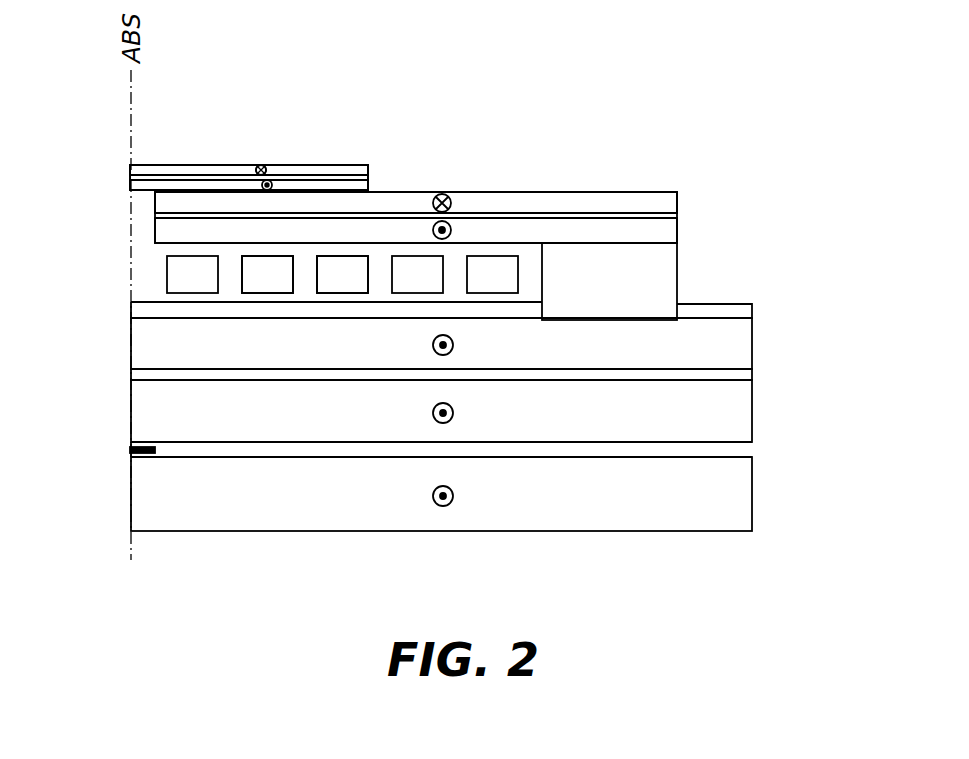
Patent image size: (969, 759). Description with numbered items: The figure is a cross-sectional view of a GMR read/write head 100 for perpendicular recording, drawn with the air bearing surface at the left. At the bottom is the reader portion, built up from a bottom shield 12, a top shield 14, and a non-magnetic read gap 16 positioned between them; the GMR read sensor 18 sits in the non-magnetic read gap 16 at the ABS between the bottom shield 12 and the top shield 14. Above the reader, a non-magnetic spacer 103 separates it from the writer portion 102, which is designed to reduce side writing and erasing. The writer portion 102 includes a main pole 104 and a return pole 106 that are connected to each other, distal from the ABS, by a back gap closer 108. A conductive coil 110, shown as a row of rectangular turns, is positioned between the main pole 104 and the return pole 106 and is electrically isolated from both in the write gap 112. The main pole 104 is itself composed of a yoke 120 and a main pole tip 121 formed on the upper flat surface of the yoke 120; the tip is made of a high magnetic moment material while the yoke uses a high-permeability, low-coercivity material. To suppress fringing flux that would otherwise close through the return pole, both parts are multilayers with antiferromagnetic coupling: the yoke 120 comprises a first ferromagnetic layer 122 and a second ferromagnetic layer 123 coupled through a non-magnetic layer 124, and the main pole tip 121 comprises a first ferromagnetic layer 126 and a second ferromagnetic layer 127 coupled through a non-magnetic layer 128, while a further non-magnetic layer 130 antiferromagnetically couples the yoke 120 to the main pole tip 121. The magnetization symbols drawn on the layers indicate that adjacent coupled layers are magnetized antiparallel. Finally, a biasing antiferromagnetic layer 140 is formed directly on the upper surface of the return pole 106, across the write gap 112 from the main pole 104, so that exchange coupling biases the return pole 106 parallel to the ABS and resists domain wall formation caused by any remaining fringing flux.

The GMR read/write head 100 is at (704, 112).
The writer portion 102 is at (847, 162).
The non-magnetic spacer 103 is at (137, 374).
The main pole 104 is at (777, 243).
The return pole 106 is at (152, 338).
The back gap closer 108 is at (633, 283).
The conductive coil 110 is at (272, 250).
The write gap 112 is at (155, 276).
The bottom shield 12 is at (143, 503).
The top shield 14 is at (152, 413).
The non-magnetic read gap 16 is at (737, 450).
The GMR read sensor 18 is at (128, 451).
The yoke 120 is at (690, 192).
The main pole tip 121 is at (382, 165).
The first ferromagnetic layer 122 is at (161, 230).
The second ferromagnetic layer 123 is at (161, 205).
The non-magnetic layer 124 is at (187, 212).
The first ferromagnetic layer 126 is at (130, 182).
The second ferromagnetic layer 127 is at (130, 170).
The non-magnetic layer 128 is at (277, 173).
The non-magnetic layer 130 is at (337, 190).
The biasing antiferromagnetic layer 140 is at (710, 312).